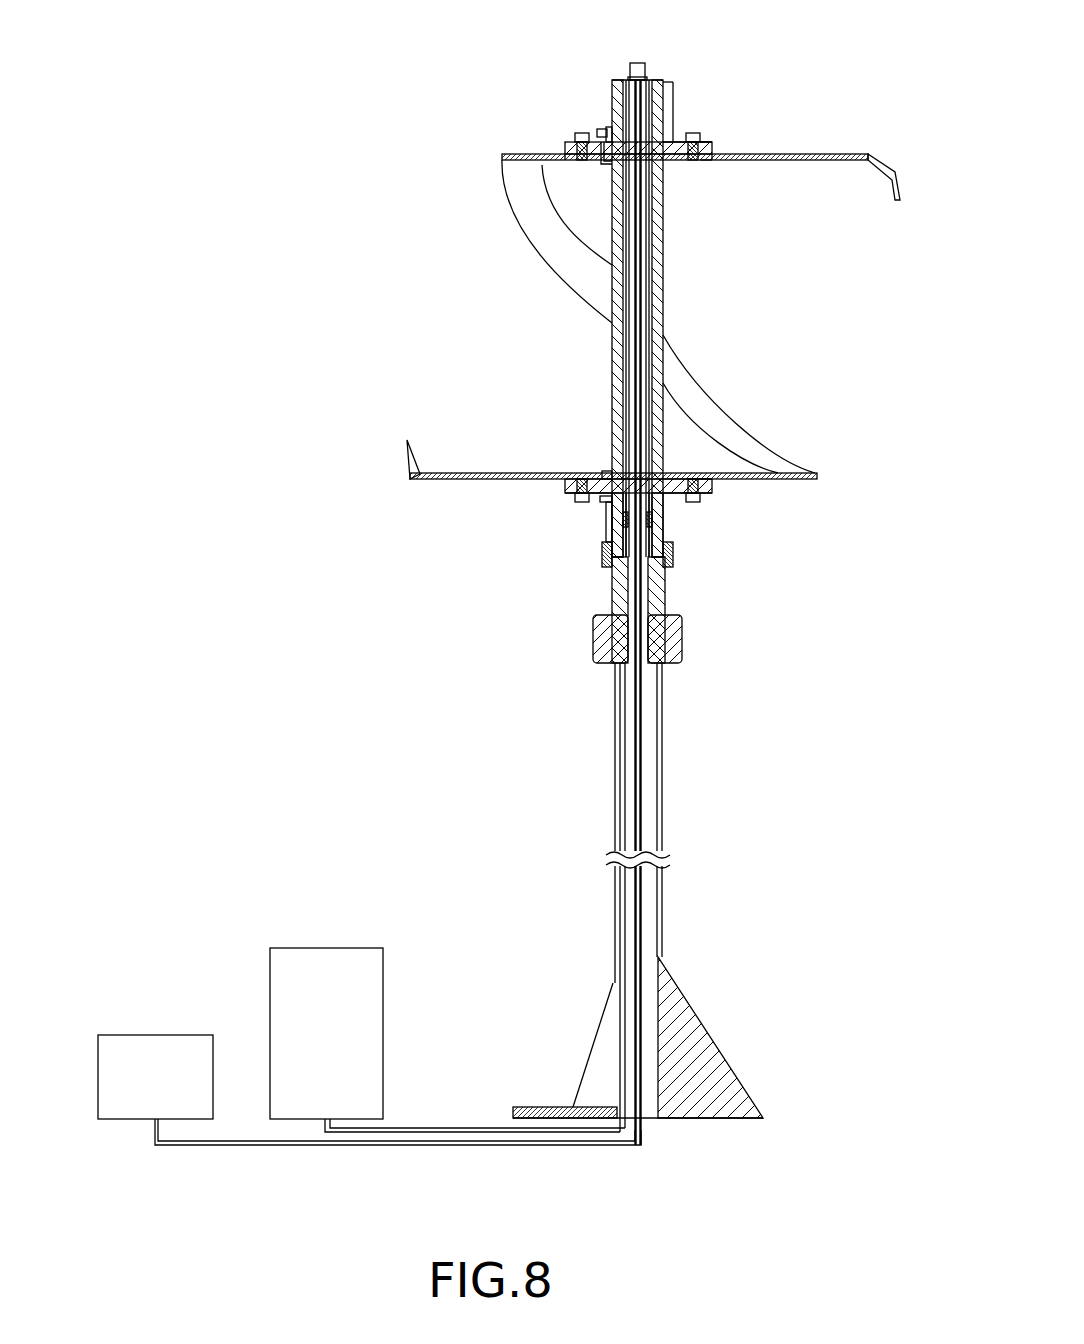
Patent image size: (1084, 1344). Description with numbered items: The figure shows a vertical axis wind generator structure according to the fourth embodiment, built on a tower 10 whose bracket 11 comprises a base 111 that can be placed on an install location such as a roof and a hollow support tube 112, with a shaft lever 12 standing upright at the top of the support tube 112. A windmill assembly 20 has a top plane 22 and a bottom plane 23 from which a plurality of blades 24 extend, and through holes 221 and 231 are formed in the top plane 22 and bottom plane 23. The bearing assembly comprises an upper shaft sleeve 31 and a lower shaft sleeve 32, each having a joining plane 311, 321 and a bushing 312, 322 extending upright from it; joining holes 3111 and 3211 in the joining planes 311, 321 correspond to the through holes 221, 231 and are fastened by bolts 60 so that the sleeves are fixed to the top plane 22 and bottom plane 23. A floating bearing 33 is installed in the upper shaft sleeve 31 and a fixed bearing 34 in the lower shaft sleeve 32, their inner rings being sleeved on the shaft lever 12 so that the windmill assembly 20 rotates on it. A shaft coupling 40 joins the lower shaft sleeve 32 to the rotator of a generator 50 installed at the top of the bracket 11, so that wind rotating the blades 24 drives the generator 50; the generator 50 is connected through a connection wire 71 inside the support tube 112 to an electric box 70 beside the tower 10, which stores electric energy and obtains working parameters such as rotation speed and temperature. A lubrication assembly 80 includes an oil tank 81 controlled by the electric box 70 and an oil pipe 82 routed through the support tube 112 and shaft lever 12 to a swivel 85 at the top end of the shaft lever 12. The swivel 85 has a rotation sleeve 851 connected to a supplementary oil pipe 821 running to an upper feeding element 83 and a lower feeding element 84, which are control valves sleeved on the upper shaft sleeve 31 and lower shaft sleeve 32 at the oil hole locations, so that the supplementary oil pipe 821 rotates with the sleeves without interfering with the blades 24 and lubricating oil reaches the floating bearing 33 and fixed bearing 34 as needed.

The tower 10 is at (745, 785).
The bracket 11 is at (598, 895).
The base 111 is at (530, 1105).
The support tube 112 is at (663, 746).
The shaft lever 12 is at (655, 286).
The windmill assembly 20 is at (483, 150).
The top plane 22 is at (762, 154).
The through holes 221 is at (700, 161).
The bottom plane 23 is at (747, 473).
The through holes 231 is at (696, 478).
The blades 24 is at (562, 238).
The upper shaft sleeve 31 is at (692, 112).
The joining plane 311 is at (685, 110).
The bushing 312 is at (674, 90).
The joining holes 3111 is at (712, 153).
The lower shaft sleeve 32 is at (725, 486).
The joining plane 321 is at (675, 493).
The bushing 322 is at (612, 545).
The joining holes 3211 is at (713, 490).
The floating bearing 33 is at (608, 127).
The fixed bearing 34 is at (624, 520).
The shaft coupling 40 is at (602, 553).
The generator 50 is at (680, 628).
The bolts 60 is at (695, 133).
The electric box 70 is at (291, 975).
The connection wire 71 is at (475, 1127).
The lubrication assembly 80 is at (135, 1128).
The oil tank 81 is at (125, 1045).
The oil pipe 82 is at (637, 1147).
The supplementary oil pipe 821 is at (615, 77).
The upper feeding element 83 is at (598, 131).
The lower feeding element 84 is at (622, 512).
The swivel 85 is at (626, 48).
The rotation sleeve 851 is at (640, 64).